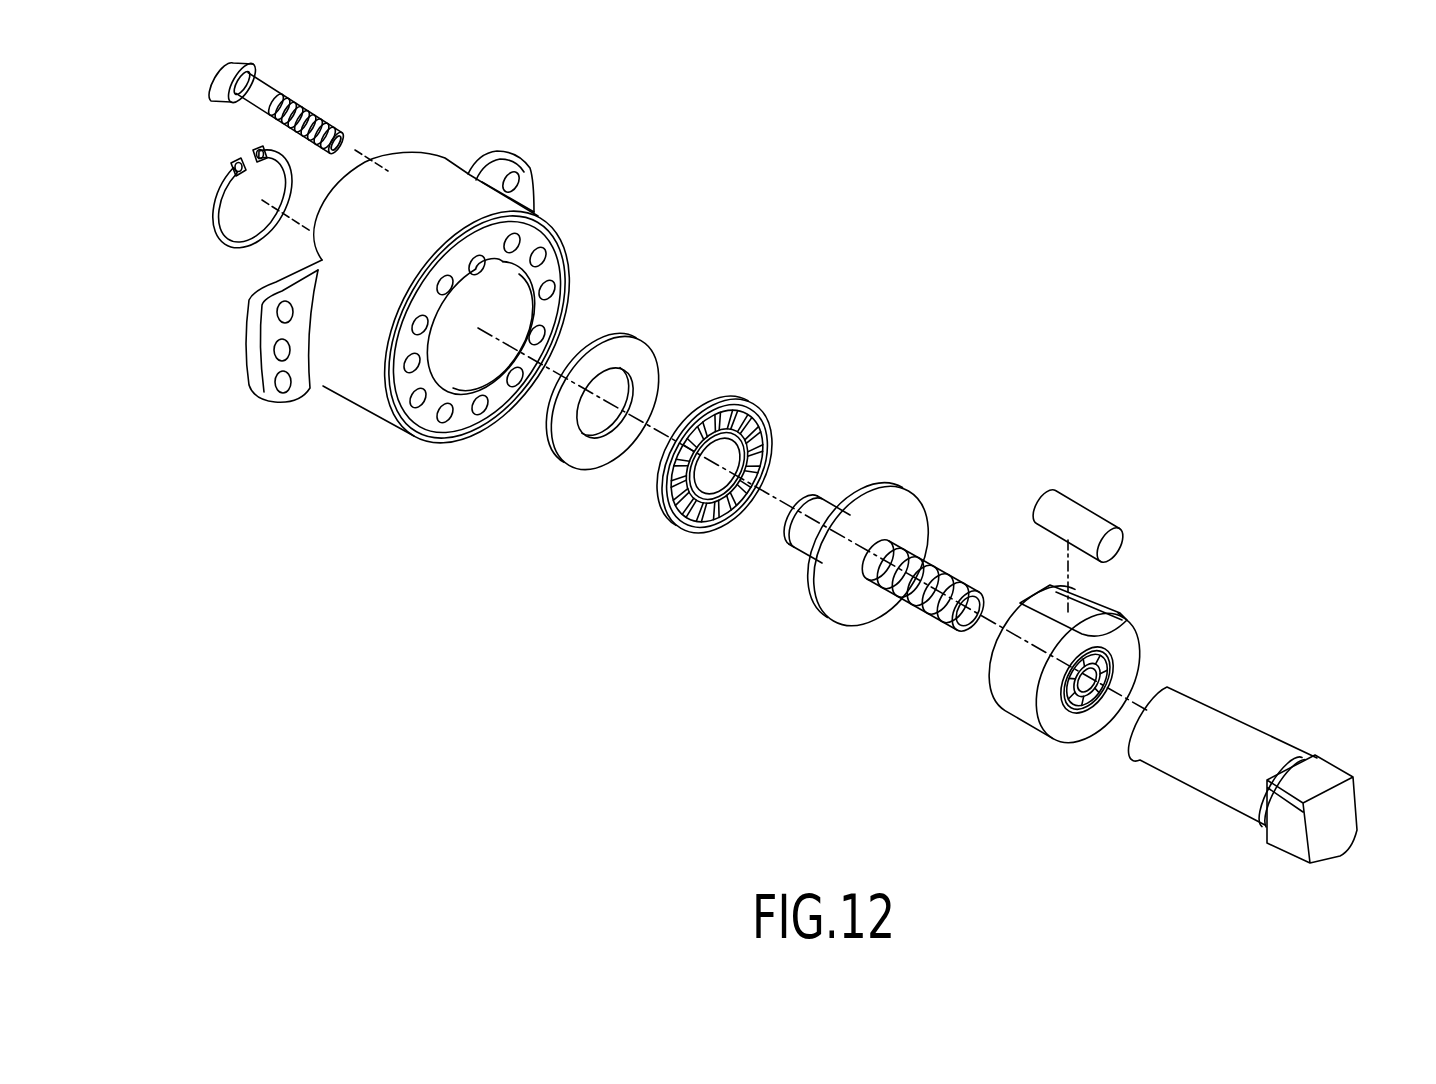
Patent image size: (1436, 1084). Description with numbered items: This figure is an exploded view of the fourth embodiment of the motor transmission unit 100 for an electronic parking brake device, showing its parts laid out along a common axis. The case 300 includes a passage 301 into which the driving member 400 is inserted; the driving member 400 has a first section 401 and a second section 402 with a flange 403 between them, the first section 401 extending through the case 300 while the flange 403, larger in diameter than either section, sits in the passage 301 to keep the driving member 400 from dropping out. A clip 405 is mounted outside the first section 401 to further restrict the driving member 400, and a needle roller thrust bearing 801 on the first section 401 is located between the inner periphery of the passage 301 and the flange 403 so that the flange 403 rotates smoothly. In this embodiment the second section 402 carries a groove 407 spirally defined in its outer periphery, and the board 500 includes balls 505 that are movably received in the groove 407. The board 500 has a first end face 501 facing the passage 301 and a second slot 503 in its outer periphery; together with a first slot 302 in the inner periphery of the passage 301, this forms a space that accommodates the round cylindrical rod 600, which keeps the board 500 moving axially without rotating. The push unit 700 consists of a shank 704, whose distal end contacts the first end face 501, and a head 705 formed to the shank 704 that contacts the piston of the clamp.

The motor transmission unit 100 is at (782, 465).
The case 300 is at (454, 338).
The passage 301 is at (488, 382).
The first slot 302 is at (488, 277).
The driving member 400 is at (877, 533).
The first section 401 is at (846, 493).
The second section 402 is at (998, 604).
The flange 403 is at (850, 585).
The clip 405 is at (233, 245).
The groove 407 is at (905, 625).
The board 500 is at (1089, 719).
The first end face 501 is at (1060, 738).
The second slot 503 is at (1110, 618).
The balls 505 is at (1083, 718).
The rod 600 is at (1085, 510).
The push unit 700 is at (1260, 728).
The shank 704 is at (1205, 712).
The head 705 is at (1322, 775).
The needle roller thrust bearing 801 is at (664, 543).